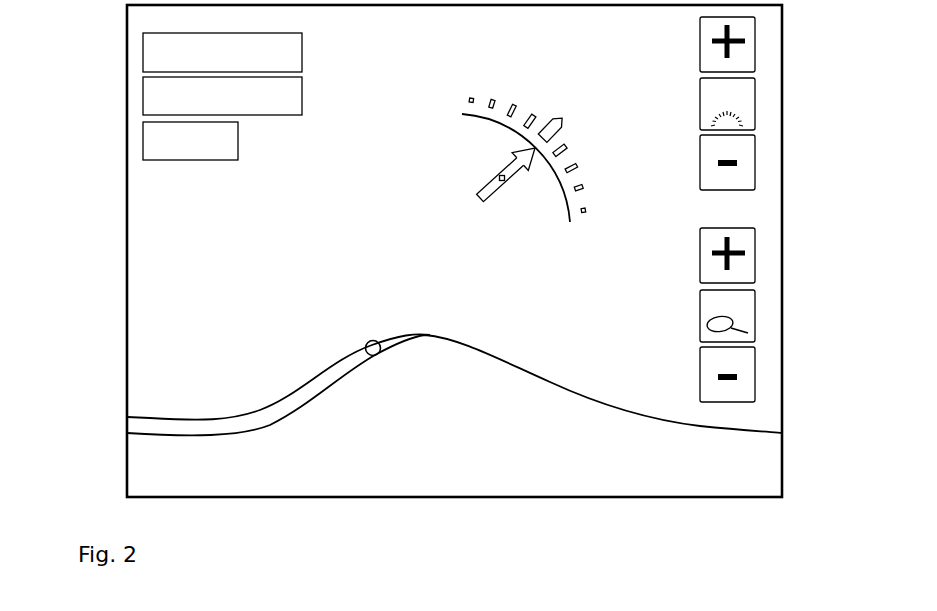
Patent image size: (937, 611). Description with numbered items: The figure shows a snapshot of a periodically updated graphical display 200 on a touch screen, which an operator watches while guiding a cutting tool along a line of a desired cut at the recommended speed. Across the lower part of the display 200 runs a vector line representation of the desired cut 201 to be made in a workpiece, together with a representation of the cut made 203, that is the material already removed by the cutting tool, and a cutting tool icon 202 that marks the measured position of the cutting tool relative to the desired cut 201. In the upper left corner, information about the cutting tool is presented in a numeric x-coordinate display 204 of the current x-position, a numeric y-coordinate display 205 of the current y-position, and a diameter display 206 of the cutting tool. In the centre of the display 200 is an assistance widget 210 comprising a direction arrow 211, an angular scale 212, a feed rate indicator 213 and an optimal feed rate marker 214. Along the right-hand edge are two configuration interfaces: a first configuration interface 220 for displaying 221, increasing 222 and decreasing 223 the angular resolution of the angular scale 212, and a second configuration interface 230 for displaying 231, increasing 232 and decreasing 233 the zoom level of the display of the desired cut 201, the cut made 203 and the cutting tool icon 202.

The graphical display 200 is at (157, 207).
The desired cut 201 is at (548, 380).
The cutting tool icon 202 is at (378, 340).
The cut made 203 is at (188, 423).
The numeric x-coordinate display 204 is at (302, 52).
The numeric y-coordinate display 205 is at (302, 96).
The diameter display 206 is at (238, 142).
The assistance widget 210 is at (495, 175).
The direction arrow 211 is at (518, 173).
The angular scale 212 is at (582, 158).
The feed rate indicator 213 is at (514, 191).
The optimal feed rate marker 214 is at (492, 172).
The first configuration interface 220 is at (730, 103).
The angular resolution display 221 is at (755, 93).
The angular resolution increase control 222 is at (755, 33).
The angular resolution decrease control 223 is at (755, 158).
The second configuration interface 230 is at (732, 315).
The zoom level display 231 is at (755, 308).
The zoom level increase control 232 is at (755, 250).
The zoom level decrease control 233 is at (755, 367).